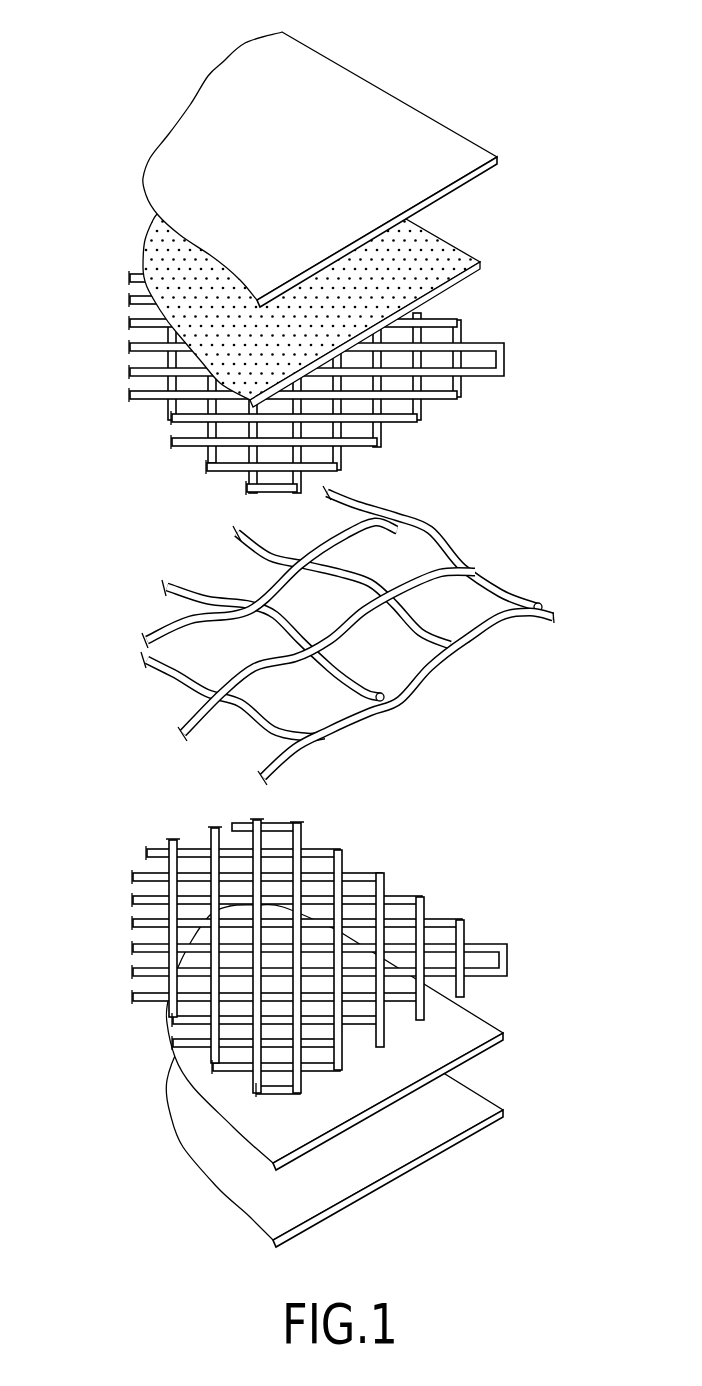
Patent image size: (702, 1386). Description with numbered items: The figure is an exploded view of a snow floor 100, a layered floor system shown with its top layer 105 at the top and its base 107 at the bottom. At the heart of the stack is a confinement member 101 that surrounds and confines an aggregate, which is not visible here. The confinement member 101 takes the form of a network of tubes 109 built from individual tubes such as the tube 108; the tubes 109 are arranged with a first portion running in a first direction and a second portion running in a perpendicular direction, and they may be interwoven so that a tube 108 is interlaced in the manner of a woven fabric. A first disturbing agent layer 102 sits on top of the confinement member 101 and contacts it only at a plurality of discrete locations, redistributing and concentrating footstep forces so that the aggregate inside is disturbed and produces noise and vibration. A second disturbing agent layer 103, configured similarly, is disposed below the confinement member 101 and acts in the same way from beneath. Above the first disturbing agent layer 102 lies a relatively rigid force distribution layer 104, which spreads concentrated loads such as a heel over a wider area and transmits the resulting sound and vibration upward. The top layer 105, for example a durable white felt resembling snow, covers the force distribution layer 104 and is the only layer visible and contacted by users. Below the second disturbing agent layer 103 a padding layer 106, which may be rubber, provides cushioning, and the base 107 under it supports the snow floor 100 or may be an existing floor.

The snow floor 100 is at (122, 52).
The confinement member 101 is at (500, 590).
The first disturbing agent layer 102 is at (502, 348).
The second disturbing agent layer 103 is at (503, 950).
The force distribution layer 104 is at (480, 262).
The top layer 105 is at (498, 158).
The padding layer 106 is at (503, 1033).
The base 107 is at (503, 1110).
The tube 108 is at (500, 627).
The tubes 109 is at (480, 485).